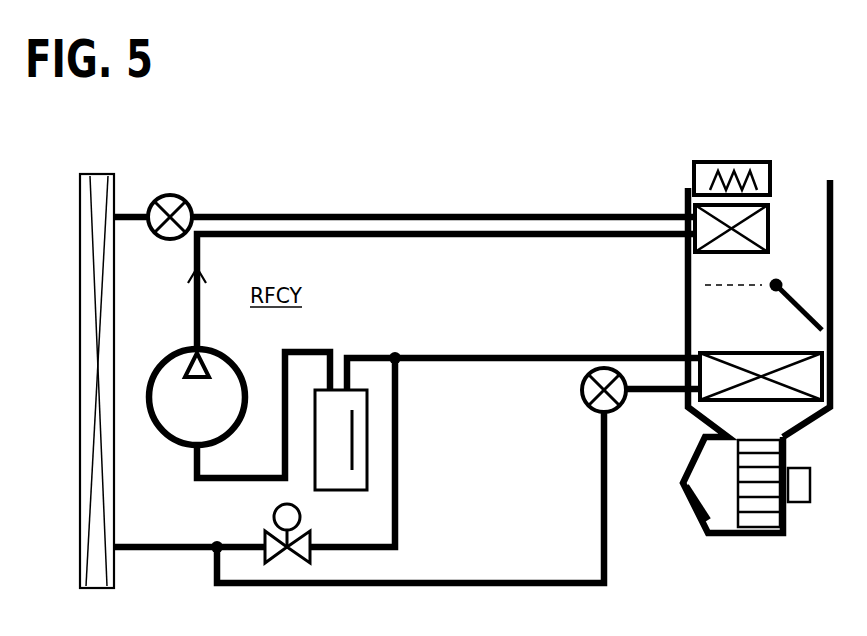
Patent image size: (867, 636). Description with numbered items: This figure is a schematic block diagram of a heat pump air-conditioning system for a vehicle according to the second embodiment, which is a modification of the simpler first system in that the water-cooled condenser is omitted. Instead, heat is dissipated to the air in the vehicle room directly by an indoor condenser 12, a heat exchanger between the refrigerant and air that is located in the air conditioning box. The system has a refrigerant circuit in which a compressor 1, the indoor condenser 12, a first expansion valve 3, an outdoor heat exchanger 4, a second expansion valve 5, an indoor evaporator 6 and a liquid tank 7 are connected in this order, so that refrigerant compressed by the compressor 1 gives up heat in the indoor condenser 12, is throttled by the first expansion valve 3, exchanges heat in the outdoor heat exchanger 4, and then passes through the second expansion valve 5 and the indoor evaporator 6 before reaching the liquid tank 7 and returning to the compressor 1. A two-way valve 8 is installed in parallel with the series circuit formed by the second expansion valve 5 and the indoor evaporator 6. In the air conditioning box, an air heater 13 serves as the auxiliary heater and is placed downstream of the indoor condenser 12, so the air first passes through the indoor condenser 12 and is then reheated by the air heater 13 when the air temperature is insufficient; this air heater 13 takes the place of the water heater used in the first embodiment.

The compressor 1 is at (173, 357).
The first expansion valve 3 is at (171, 195).
The outdoor heat exchanger 4 is at (93, 174).
The second expansion valve 5 is at (581, 390).
The indoor evaporator 6 is at (728, 352).
The liquid tank 7 is at (339, 388).
The two-way valve 8 is at (312, 560).
The indoor condenser 12 is at (770, 233).
The air heater 13 is at (693, 168).